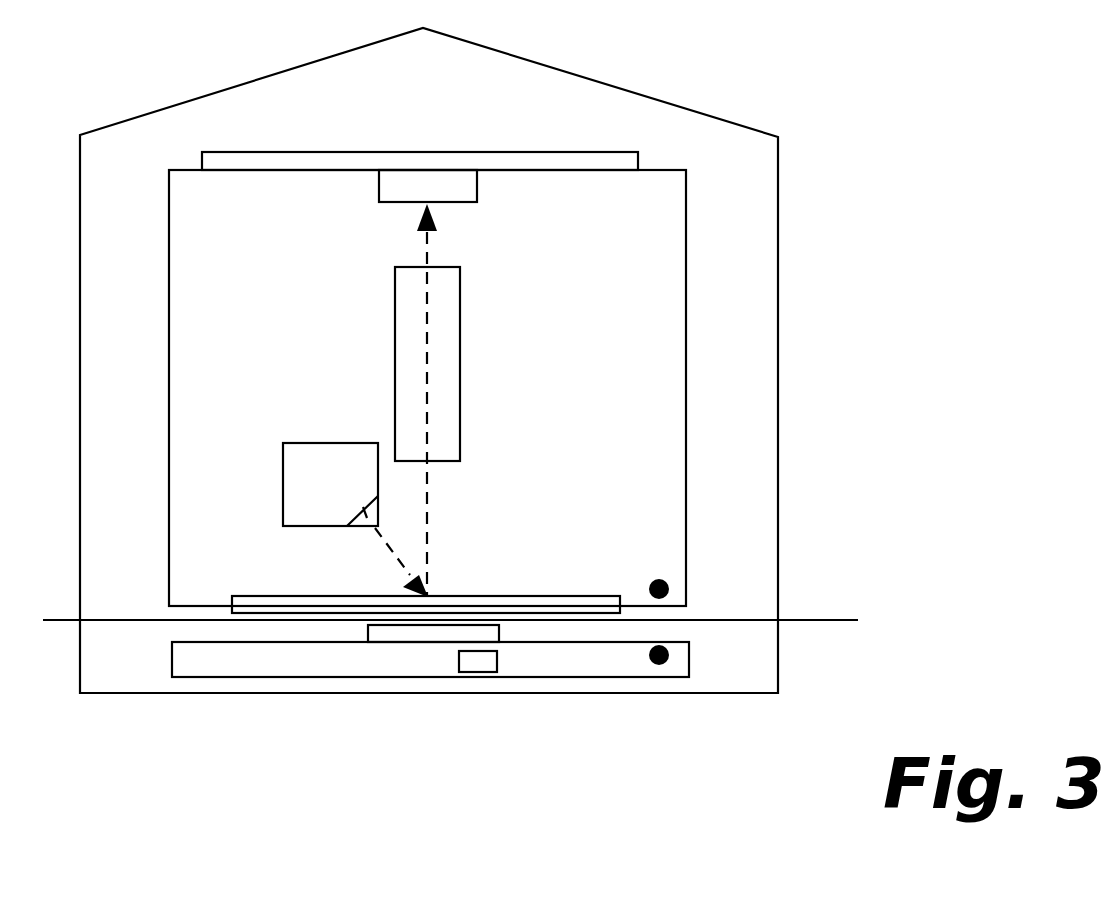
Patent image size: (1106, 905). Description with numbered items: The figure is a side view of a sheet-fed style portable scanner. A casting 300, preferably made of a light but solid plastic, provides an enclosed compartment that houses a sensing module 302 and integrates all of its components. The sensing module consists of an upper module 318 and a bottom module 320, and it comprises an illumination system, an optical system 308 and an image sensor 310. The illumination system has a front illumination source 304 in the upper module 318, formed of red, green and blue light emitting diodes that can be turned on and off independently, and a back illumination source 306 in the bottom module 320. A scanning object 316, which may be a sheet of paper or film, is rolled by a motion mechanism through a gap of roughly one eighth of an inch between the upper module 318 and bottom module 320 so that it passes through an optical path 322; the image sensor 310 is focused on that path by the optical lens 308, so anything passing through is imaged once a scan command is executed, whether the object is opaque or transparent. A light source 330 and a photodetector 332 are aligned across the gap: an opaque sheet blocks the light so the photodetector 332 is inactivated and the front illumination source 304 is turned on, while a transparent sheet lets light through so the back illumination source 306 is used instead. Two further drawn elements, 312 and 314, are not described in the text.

The casting 300 is at (513, 53).
The sensing module 302 is at (662, 282).
The front illumination source 304 is at (326, 463).
The back illumination source 306 is at (480, 664).
The optical system 308 is at (452, 358).
The image sensor 310 is at (472, 187).
The window 312 is at (311, 162).
The substrate 314 is at (397, 635).
The scanning object 316 is at (826, 620).
The upper module 318 is at (233, 219).
The bottom module 320 is at (194, 664).
The optical path 322 is at (432, 505).
The light source 330 is at (672, 583).
The photodetector 332 is at (675, 656).